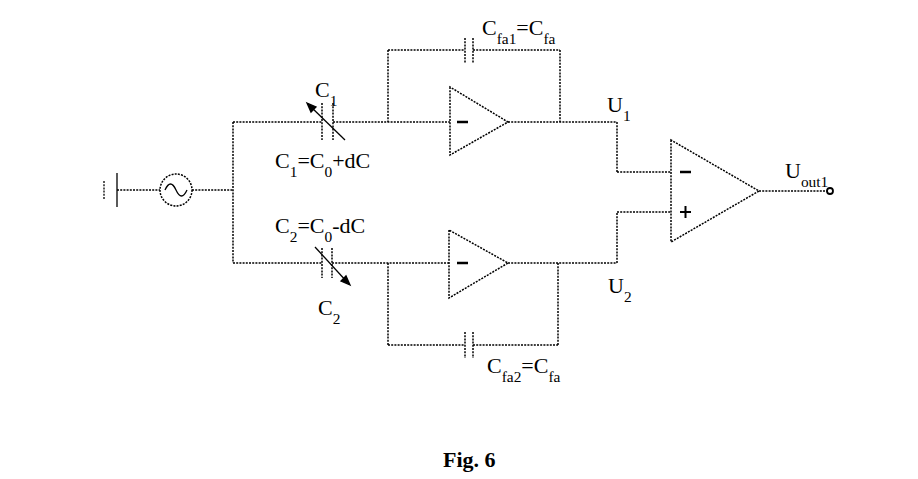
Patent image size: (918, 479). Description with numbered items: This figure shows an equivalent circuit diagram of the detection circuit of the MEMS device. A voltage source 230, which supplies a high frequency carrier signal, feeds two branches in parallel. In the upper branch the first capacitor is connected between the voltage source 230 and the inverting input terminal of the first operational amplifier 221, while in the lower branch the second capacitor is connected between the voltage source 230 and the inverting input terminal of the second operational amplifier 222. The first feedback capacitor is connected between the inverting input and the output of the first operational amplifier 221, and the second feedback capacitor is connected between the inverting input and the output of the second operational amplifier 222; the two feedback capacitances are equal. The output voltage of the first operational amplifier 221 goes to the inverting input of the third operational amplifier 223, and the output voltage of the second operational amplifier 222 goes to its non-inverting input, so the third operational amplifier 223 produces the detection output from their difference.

The voltage source 230 is at (177, 208).
The first operational amplifier 221 is at (477, 140).
The second operational amplifier 222 is at (475, 243).
The third operational amplifier 223 is at (695, 150).